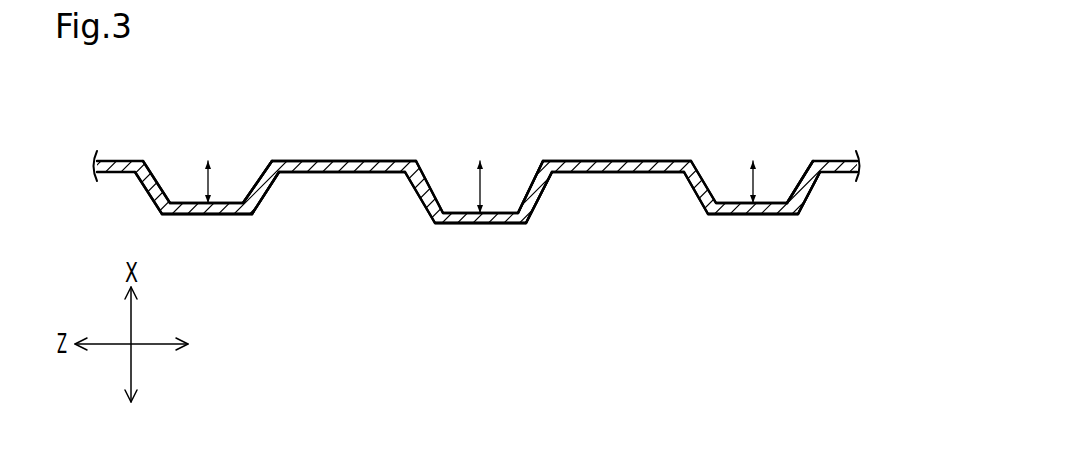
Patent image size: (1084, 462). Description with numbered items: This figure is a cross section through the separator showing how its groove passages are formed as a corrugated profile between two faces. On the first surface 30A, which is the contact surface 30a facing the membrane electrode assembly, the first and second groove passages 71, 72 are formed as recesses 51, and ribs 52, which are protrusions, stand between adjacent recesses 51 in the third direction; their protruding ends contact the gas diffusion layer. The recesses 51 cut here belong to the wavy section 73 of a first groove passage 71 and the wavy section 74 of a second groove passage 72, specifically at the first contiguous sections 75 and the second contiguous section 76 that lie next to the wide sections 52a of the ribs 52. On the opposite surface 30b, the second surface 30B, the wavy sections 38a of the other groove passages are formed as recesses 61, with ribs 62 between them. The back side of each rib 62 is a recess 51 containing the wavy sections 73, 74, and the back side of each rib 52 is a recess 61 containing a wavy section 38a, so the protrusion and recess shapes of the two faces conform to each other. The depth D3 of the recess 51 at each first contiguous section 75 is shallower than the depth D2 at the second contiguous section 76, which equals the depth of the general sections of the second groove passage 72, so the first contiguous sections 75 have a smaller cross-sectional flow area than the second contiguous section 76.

The contact surface 30a is at (841, 149).
The first surface 30A is at (518, 158).
The surface 30b is at (843, 184).
The second surface 30B is at (518, 205).
The wide section 52a is at (343, 160).
The rib 52 is at (484, 122).
The recess 61 is at (352, 173).
The wavy section 38a is at (486, 211).
The wavy section 73 is at (259, 166).
The first groove passage 71 is at (534, 142).
The wavy section 74 is at (533, 168).
The second groove passage 72 is at (547, 164).
The rib 62 is at (197, 215).
The recess 51 is at (491, 220).
The first contiguous section 75 is at (223, 200).
The second contiguous section 76 is at (495, 209).
The depth D2 is at (478, 188).
The depth D3 is at (206, 183).